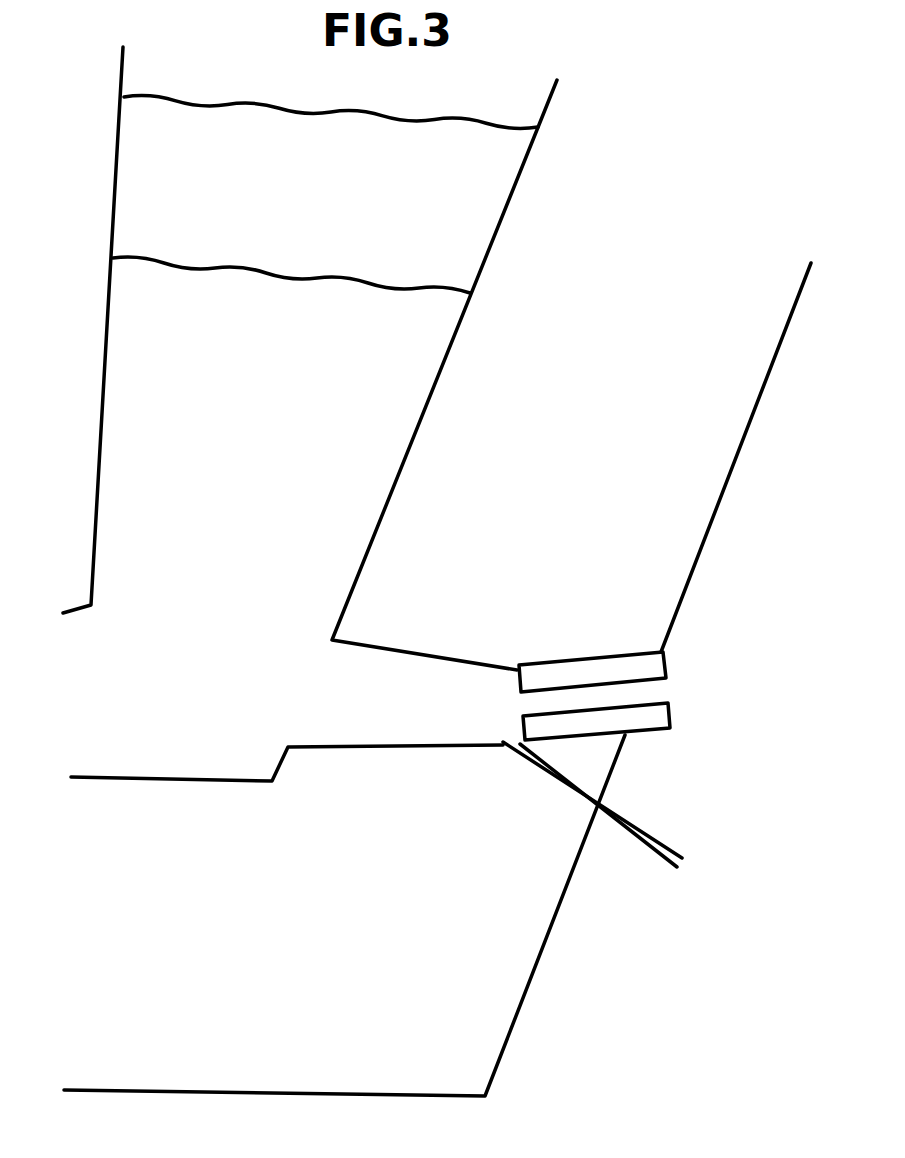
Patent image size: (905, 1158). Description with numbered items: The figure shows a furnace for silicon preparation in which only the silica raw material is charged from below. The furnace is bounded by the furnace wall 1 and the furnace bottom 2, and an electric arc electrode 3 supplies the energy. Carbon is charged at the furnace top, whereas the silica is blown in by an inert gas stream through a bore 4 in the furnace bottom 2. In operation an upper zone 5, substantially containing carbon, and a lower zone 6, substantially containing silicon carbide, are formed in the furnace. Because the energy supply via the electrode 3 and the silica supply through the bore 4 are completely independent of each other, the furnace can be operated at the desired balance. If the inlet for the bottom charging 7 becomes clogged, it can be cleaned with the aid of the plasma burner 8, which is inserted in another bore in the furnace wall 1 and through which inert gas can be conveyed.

The furnace wall 1 is at (588, 444).
The furnace bottom 2 is at (324, 938).
The electric arc electrode 3 is at (85, 545).
The bore 4 is at (543, 768).
The upper zone 5 is at (314, 207).
The lower zone 6 is at (266, 437).
The inlet for the bottom charging 7 is at (378, 705).
The plasma burner 8 is at (657, 690).